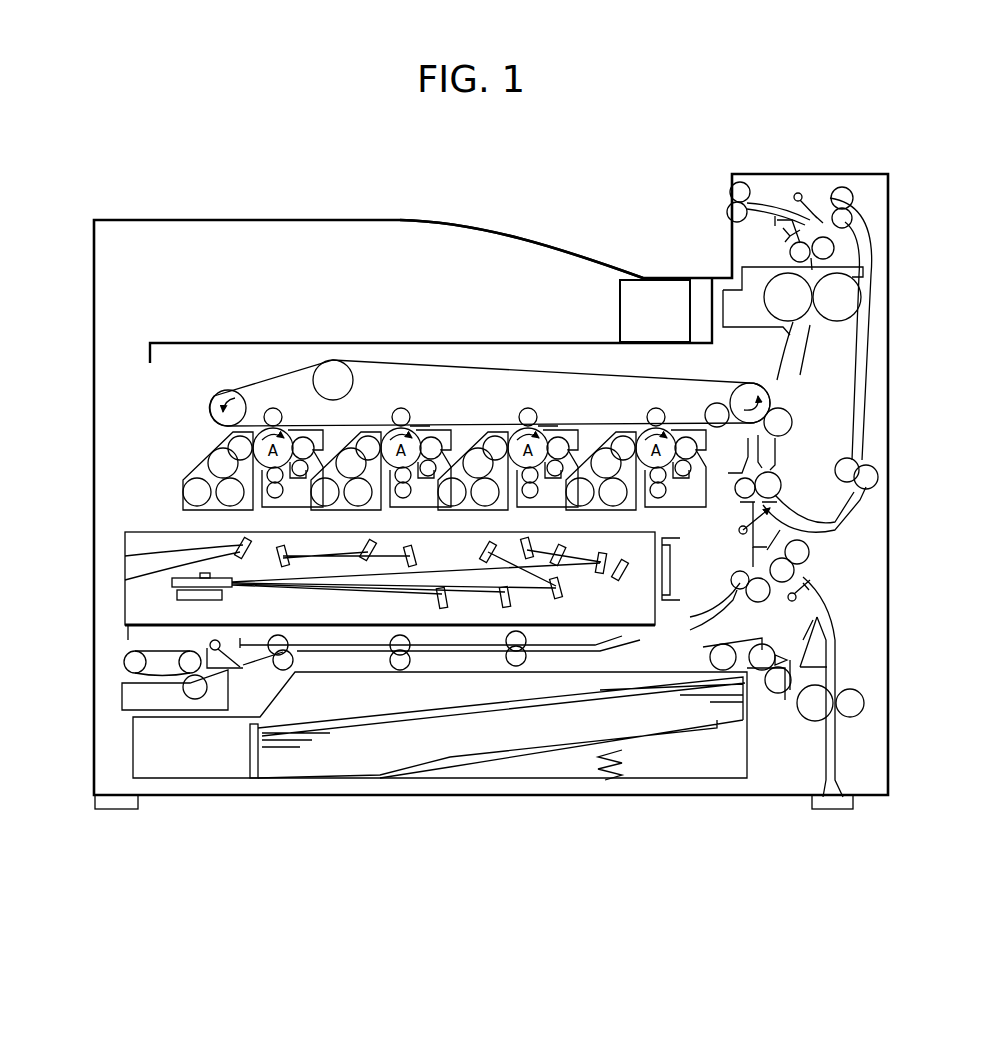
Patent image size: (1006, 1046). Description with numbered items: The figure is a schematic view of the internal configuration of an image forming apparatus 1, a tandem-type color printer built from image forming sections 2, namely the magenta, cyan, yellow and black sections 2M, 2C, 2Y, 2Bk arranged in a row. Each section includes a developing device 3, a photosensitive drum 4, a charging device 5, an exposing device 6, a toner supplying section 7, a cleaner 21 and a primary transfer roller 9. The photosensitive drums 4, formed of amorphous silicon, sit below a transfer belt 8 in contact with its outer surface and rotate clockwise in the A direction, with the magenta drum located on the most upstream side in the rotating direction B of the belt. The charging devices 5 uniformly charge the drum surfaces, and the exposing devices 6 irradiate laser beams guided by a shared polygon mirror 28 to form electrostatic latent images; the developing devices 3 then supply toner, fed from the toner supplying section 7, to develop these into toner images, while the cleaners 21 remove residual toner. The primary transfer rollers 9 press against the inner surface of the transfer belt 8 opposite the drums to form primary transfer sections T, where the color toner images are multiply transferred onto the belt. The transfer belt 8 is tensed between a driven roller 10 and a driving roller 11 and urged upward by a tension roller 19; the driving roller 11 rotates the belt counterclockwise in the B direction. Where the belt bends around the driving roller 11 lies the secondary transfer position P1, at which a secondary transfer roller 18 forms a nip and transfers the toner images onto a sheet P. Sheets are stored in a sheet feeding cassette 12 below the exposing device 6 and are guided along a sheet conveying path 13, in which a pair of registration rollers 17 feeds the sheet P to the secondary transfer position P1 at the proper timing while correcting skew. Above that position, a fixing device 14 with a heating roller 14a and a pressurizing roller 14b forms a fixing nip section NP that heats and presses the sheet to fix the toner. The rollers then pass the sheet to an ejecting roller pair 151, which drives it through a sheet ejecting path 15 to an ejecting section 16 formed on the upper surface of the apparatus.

The image forming apparatus 1 is at (140, 148).
The image forming sections 2 is at (590, 160).
The image forming section for magenta 2M is at (194, 374).
The image forming section for cyan 2C is at (435, 412).
The image forming section for yellow 2Y is at (500, 412).
The image forming section for black 2Bk is at (630, 412).
The developing devices 3 is at (215, 509).
The photosensitive drums 4 is at (163, 493).
The charging devices 5 is at (265, 462).
The exposing devices 6 is at (349, 578).
The toner supplying section 7 is at (643, 295).
The transfer belt 8 is at (400, 415).
The primary transfer rollers 9 is at (276, 407).
The driven roller 10 is at (235, 395).
The driving roller 11 is at (772, 392).
The sheet feeding cassette 12 is at (488, 800).
The sheet conveying path 13 is at (810, 572).
The fixing device 14 is at (828, 303).
The heating roller 14a is at (770, 292).
The pressurizing roller 14b is at (852, 297).
The sheet ejecting path 15 is at (853, 186).
The ejecting roller pair 151 is at (812, 250).
The ejecting section 16 is at (610, 268).
The registration rollers 17 is at (781, 485).
The secondary transfer roller 18 is at (790, 430).
The tension roller 19 is at (333, 365).
The cleaners 21 is at (323, 508).
The polygon mirror 28 is at (172, 590).
The rotating direction of the photosensitive drums A is at (252, 452).
The rotating direction of the transfer belt B is at (648, 390).
The primary transfer sections T is at (422, 420).
The sheet P is at (653, 690).
The secondary transfer position P1 is at (795, 418).
The fixing nip section NP is at (800, 320).